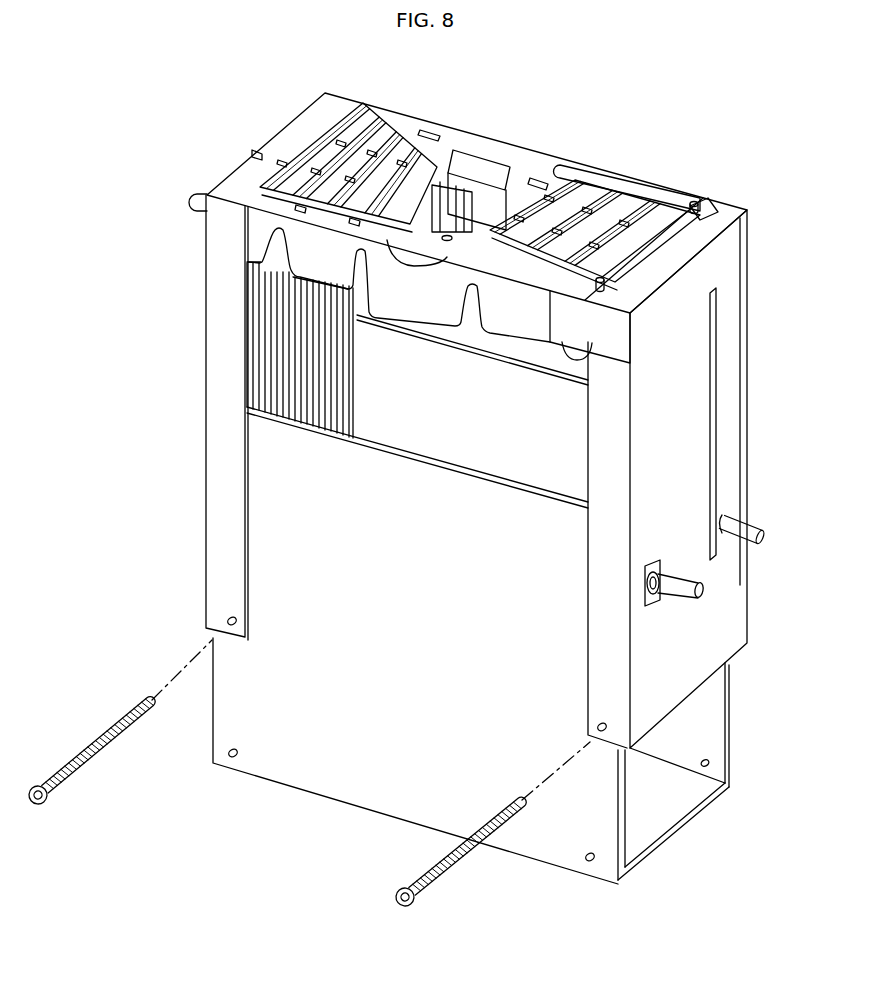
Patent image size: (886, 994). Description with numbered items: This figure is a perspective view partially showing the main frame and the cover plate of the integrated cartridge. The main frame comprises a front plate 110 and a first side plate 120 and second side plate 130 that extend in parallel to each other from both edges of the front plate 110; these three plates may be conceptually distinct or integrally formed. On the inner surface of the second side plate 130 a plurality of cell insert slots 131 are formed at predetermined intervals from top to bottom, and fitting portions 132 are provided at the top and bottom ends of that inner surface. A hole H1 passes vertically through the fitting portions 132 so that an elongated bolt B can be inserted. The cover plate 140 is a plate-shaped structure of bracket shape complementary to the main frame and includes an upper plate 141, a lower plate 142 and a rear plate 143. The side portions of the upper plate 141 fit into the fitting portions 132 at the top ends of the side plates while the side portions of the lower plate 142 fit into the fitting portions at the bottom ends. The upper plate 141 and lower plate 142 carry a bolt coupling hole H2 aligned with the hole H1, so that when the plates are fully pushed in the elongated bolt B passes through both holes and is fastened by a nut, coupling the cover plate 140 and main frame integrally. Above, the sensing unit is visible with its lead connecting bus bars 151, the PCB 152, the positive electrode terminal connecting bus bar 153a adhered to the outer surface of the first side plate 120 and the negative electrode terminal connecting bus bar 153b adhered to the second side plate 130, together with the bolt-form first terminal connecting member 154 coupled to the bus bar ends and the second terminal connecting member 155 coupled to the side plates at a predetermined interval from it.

The front plate 110 is at (728, 212).
The first side plate 120 is at (740, 583).
The second side plate 130 is at (218, 387).
The cell insert slots 131 is at (267, 305).
The fitting portions 132 is at (250, 338).
The cover plate 140 is at (699, 796).
The upper plate 141 is at (666, 837).
The lower plate 142 is at (717, 738).
The rear plate 143 is at (670, 808).
The lead connecting bus bars 151 is at (413, 140).
The PCB 152 is at (535, 165).
The positive electrode terminal connecting bus bar 153a is at (733, 327).
The negative electrode terminal connecting bus bar 153b is at (631, 183).
The first terminal connecting member 154 is at (258, 156).
The second terminal connecting member 155 is at (197, 200).
The elongated bolt B is at (80, 748).
The hole H1 is at (228, 618).
The bolt coupling hole H2 is at (233, 758).